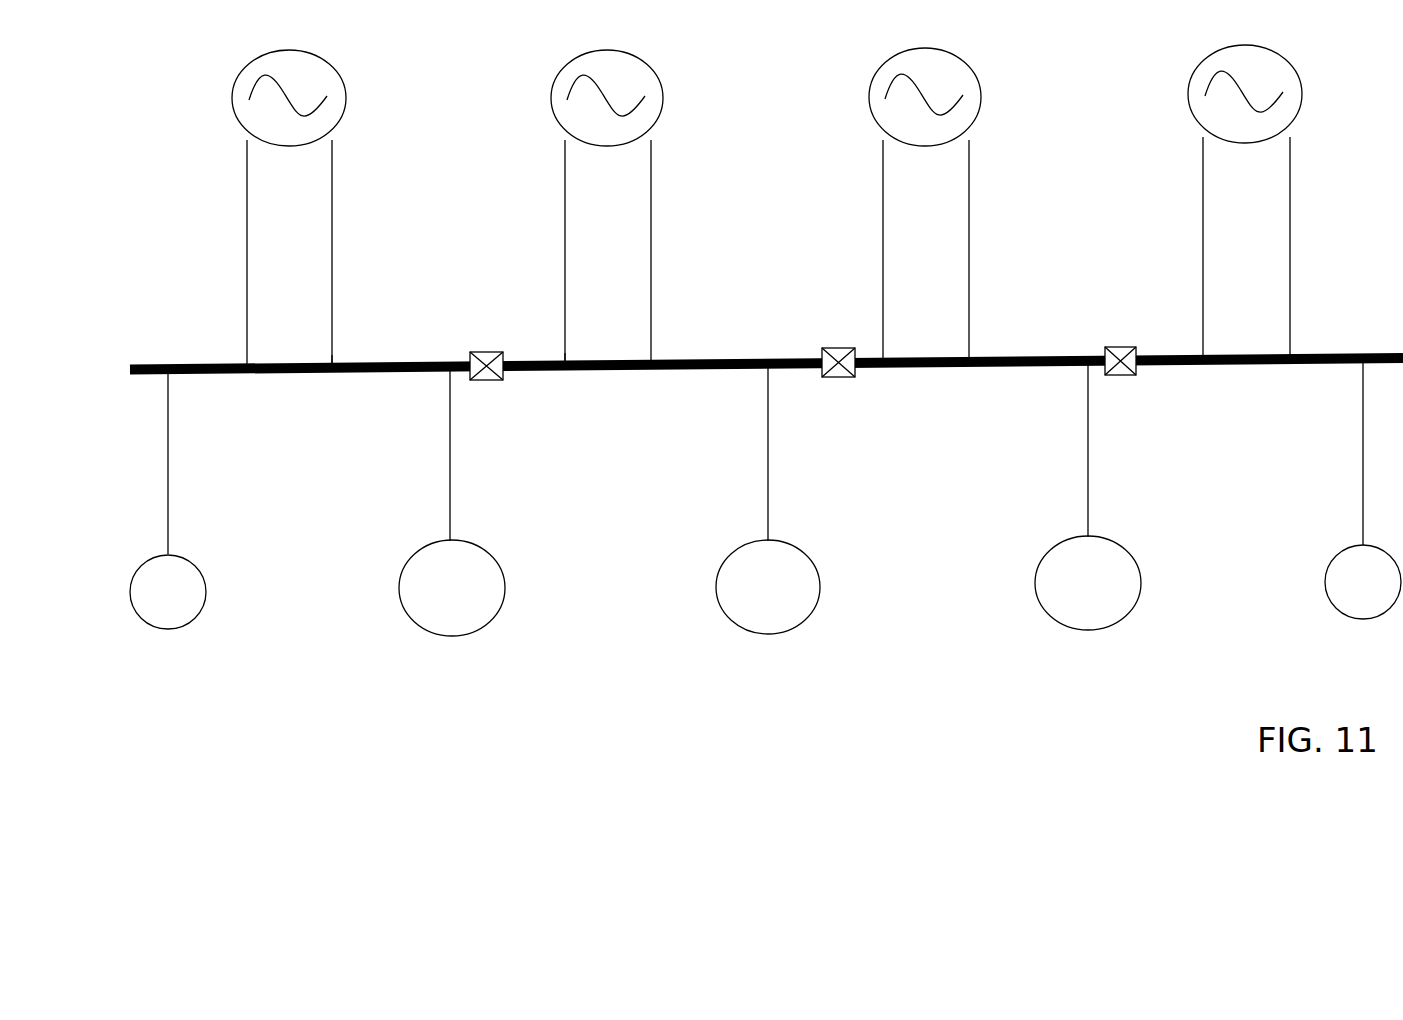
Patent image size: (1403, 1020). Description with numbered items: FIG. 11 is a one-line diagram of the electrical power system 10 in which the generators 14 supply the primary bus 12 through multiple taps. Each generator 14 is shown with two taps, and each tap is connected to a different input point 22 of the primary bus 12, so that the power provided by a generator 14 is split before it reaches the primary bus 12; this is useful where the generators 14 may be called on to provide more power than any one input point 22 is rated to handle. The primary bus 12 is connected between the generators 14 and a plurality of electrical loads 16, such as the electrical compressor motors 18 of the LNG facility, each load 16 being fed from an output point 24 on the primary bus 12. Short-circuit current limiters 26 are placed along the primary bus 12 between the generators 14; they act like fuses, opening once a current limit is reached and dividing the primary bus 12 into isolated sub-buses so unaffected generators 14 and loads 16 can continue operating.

The electrical power system 10 is at (323, 685).
The primary bus 12 is at (1173, 355).
The generator 14 is at (902, 108).
The electrical load 16 is at (1353, 587).
The electrical compressor motor 18 is at (460, 580).
The input point 22 is at (562, 357).
The output point 24 is at (443, 373).
The short-circuit current limiter 26 is at (838, 355).